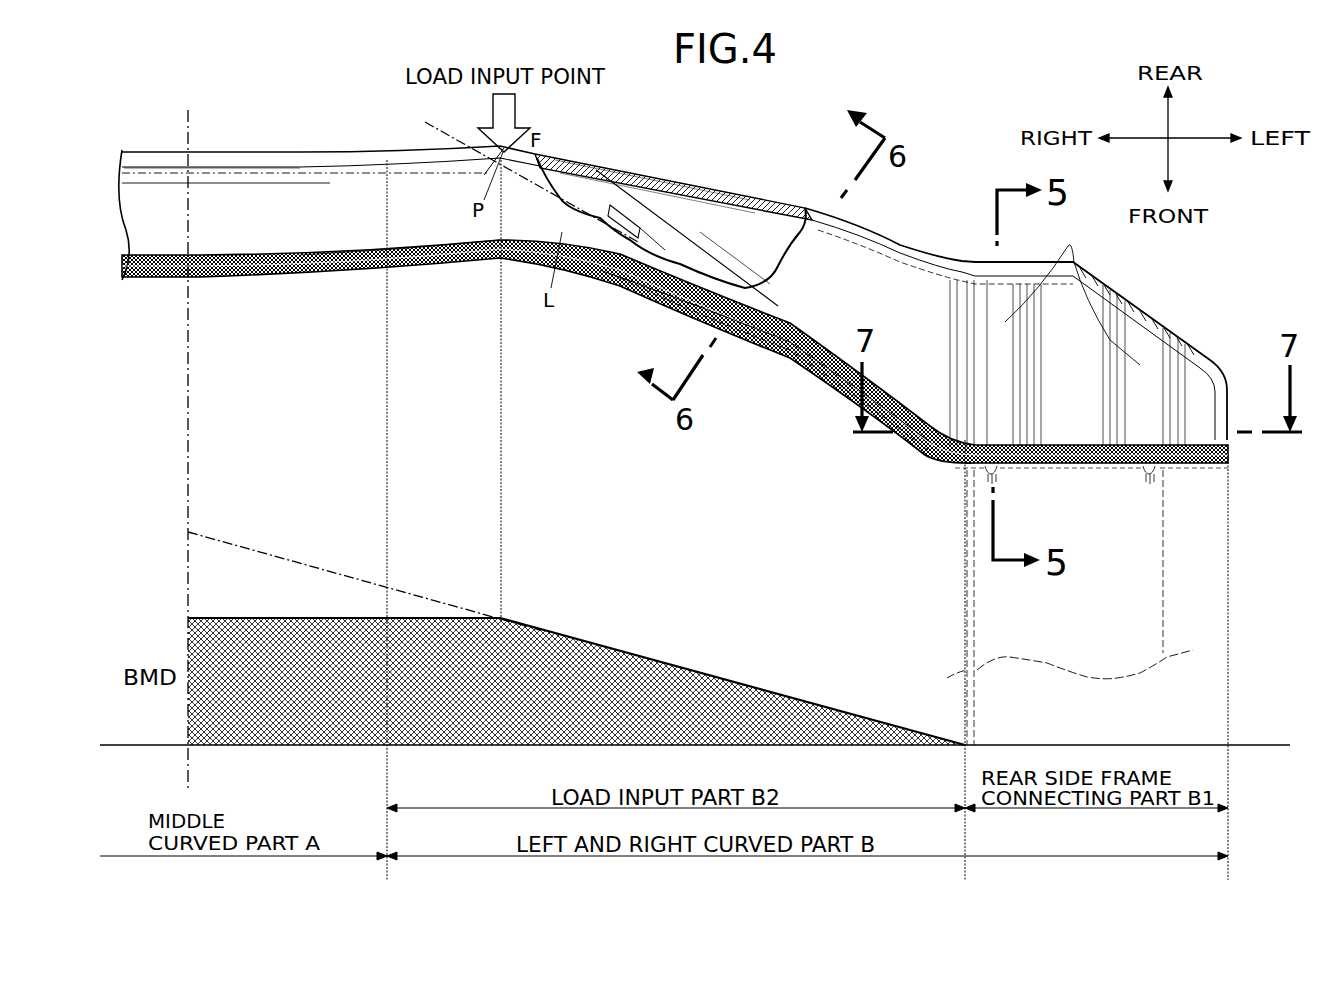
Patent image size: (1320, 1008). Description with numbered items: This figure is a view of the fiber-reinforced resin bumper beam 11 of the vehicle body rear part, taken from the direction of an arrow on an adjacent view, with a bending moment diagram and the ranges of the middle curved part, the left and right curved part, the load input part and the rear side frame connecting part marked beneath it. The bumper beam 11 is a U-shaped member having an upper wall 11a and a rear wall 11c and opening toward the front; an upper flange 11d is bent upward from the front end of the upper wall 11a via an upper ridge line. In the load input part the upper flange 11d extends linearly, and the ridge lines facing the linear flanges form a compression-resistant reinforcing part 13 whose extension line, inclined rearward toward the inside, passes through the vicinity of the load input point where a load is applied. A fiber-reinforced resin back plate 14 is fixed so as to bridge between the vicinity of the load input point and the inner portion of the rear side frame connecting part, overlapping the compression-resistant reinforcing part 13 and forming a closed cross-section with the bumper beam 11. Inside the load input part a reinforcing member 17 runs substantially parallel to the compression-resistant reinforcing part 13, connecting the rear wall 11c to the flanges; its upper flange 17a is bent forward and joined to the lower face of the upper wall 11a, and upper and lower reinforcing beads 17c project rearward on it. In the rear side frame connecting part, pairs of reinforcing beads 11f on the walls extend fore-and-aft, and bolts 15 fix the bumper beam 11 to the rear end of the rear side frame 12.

The bumper beam 11 is at (403, 143).
The upper wall 11a is at (272, 282).
The rear wall 11c is at (290, 164).
The upper flange 11d is at (326, 252).
The reinforcing beads 11f is at (1072, 254).
The rear side frame 12 is at (973, 597).
The compression-resistant reinforcing part 13 is at (796, 364).
The back plate 14 is at (712, 318).
The bolts 15 is at (1145, 438).
The reinforcing member 17 is at (722, 260).
The upper flange 17a is at (642, 190).
The reinforcing beads 17c is at (636, 240).